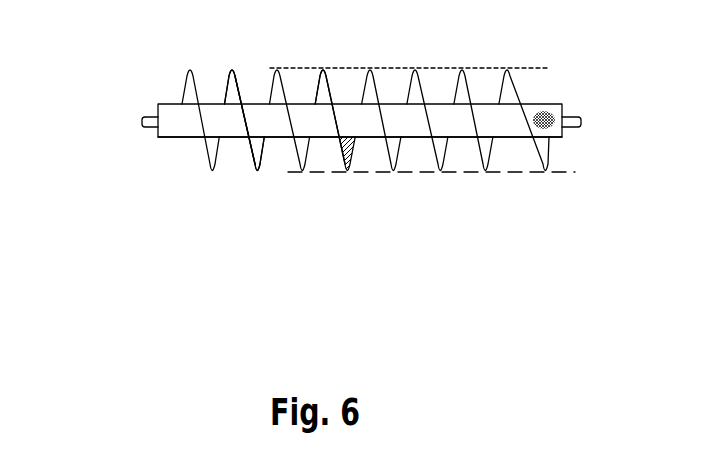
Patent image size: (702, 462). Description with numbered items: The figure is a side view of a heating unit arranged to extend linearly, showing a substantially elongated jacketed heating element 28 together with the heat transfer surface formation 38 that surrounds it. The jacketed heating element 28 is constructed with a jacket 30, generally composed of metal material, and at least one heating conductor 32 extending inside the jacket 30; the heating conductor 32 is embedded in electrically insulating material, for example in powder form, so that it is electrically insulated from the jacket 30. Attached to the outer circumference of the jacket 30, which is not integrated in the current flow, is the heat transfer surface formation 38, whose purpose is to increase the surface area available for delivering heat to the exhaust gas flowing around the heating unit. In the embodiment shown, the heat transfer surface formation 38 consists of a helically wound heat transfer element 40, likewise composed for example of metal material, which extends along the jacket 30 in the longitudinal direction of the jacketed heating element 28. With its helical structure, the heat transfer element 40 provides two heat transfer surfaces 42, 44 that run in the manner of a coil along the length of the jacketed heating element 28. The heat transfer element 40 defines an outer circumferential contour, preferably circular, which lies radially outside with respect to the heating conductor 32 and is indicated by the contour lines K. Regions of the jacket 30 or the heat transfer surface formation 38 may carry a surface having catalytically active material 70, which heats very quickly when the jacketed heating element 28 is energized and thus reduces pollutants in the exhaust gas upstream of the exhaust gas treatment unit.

The jacketed heating element 28 is at (185, 138).
The jacket 30 is at (176, 108).
The heating conductor 32 is at (142, 122).
The heat transfer surface formation 38 is at (427, 74).
The helically wound heat transfer element 40 is at (333, 80).
The heat transfer surface 42 is at (232, 76).
The heat transfer surface 44 is at (258, 155).
The catalytically active material 70 is at (352, 172).
The contour lines K is at (526, 68).